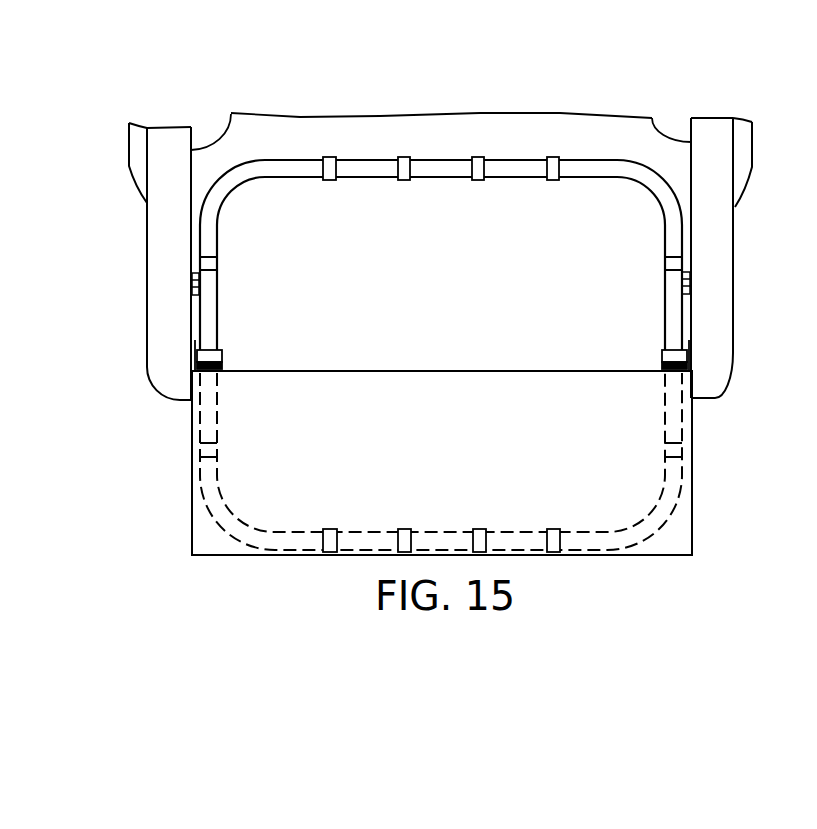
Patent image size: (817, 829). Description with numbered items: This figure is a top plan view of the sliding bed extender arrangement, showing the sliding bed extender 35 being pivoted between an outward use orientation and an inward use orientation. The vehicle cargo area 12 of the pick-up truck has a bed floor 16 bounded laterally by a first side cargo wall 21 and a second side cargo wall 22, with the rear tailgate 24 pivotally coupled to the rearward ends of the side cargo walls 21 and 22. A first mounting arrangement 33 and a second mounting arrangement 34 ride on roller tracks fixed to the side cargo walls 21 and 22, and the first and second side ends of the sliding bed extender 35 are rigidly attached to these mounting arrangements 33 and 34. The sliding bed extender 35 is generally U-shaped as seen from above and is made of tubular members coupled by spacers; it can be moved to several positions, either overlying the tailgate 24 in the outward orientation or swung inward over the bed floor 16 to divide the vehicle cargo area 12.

The vehicle cargo area 12 is at (615, 312).
The bed floor 16 is at (489, 304).
The first side cargo wall 21 is at (230, 115).
The second side cargo wall 22 is at (652, 117).
The rear tailgate 24 is at (693, 512).
The first mounting arrangement 33 is at (172, 281).
The second mounting arrangement 34 is at (714, 279).
The sliding bed extender 35 is at (360, 142).